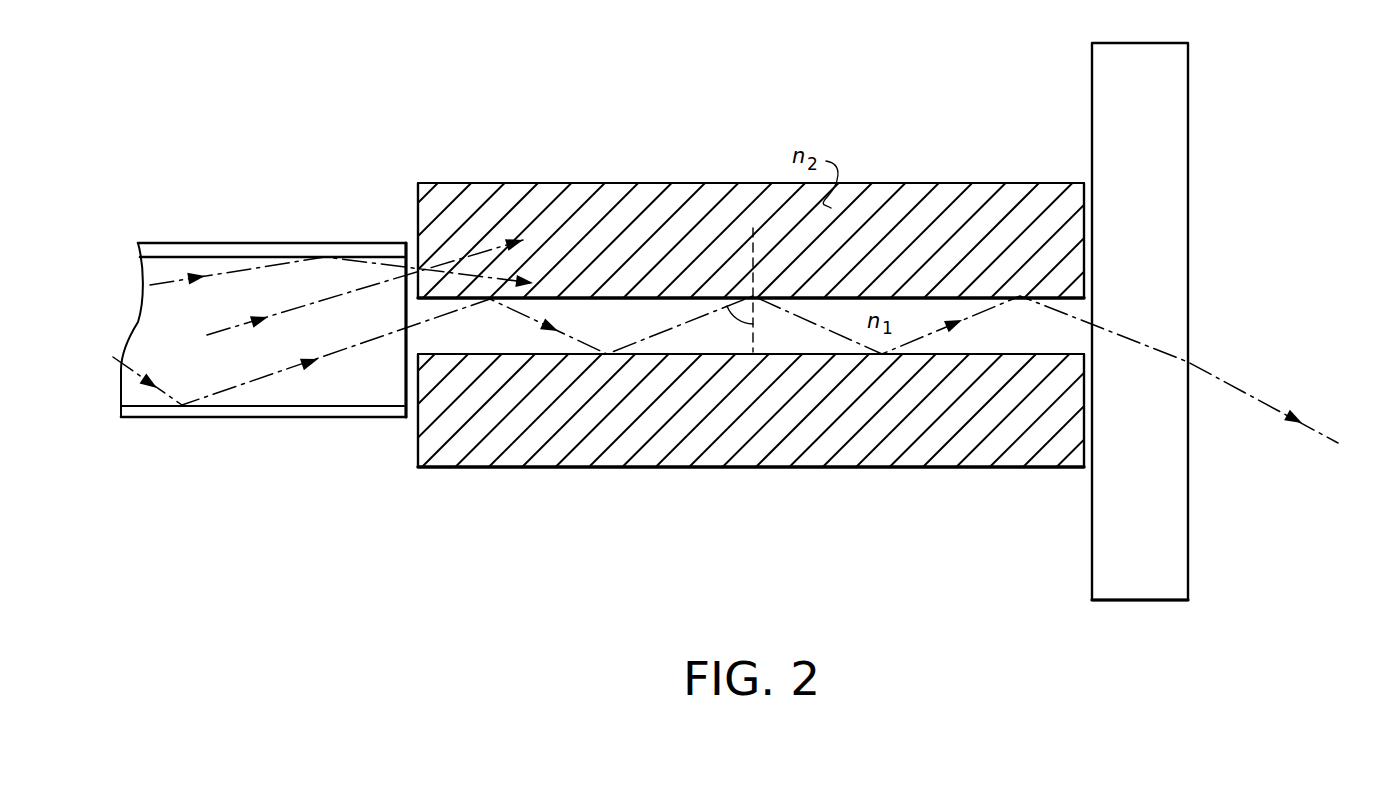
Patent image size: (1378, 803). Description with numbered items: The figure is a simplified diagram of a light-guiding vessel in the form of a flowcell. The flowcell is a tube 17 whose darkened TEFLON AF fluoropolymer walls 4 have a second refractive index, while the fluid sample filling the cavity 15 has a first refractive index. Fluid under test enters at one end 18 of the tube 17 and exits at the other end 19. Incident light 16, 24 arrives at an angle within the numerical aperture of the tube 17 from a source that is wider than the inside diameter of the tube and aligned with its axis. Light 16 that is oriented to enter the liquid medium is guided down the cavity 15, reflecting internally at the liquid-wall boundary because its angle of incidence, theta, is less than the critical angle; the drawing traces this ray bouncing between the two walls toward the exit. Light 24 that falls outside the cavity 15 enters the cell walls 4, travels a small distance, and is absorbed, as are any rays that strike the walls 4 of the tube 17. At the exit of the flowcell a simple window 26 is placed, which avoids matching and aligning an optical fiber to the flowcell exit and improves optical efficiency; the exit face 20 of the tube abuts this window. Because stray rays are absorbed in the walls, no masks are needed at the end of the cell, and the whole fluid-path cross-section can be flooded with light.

The cell walls 4 is at (619, 196).
The cavity 15 is at (1030, 336).
The light 16 is at (161, 393).
The tube 17 is at (636, 471).
The one end 18 is at (410, 230).
The other end 19 is at (268, 421).
The exit face 20 is at (1083, 476).
The light 24 is at (178, 284).
The window 26 is at (1151, 538).